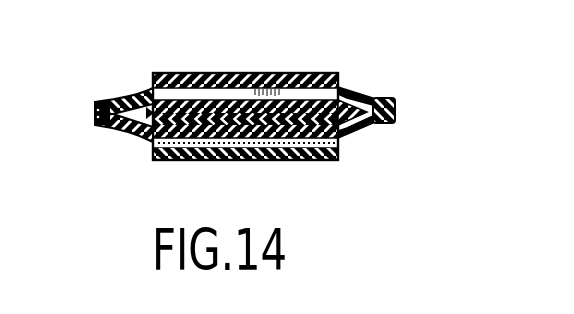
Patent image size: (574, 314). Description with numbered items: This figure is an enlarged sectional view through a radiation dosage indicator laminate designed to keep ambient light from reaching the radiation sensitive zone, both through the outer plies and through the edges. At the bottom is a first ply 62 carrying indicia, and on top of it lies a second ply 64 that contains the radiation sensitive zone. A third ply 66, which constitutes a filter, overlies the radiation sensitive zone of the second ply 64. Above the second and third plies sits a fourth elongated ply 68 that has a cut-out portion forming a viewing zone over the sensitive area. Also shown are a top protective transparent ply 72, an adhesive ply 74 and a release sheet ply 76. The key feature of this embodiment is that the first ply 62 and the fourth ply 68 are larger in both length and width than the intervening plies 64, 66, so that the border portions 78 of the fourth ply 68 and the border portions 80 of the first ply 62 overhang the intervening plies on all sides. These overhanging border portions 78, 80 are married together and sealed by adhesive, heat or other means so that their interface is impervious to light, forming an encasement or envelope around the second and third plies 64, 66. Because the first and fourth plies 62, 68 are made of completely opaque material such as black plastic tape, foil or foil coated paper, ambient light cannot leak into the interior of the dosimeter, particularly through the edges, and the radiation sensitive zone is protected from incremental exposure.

The first ply 62 is at (113, 129).
The second ply 64 is at (345, 128).
The third ply 66 is at (140, 95).
The fourth elongated ply 68 is at (108, 100).
The top protective transparent ply 72 is at (298, 72).
The adhesive ply 74 is at (152, 139).
The release sheet ply 76 is at (187, 161).
The border portions of fourth ply 78 is at (375, 97).
The border portions of first ply 80 is at (383, 124).